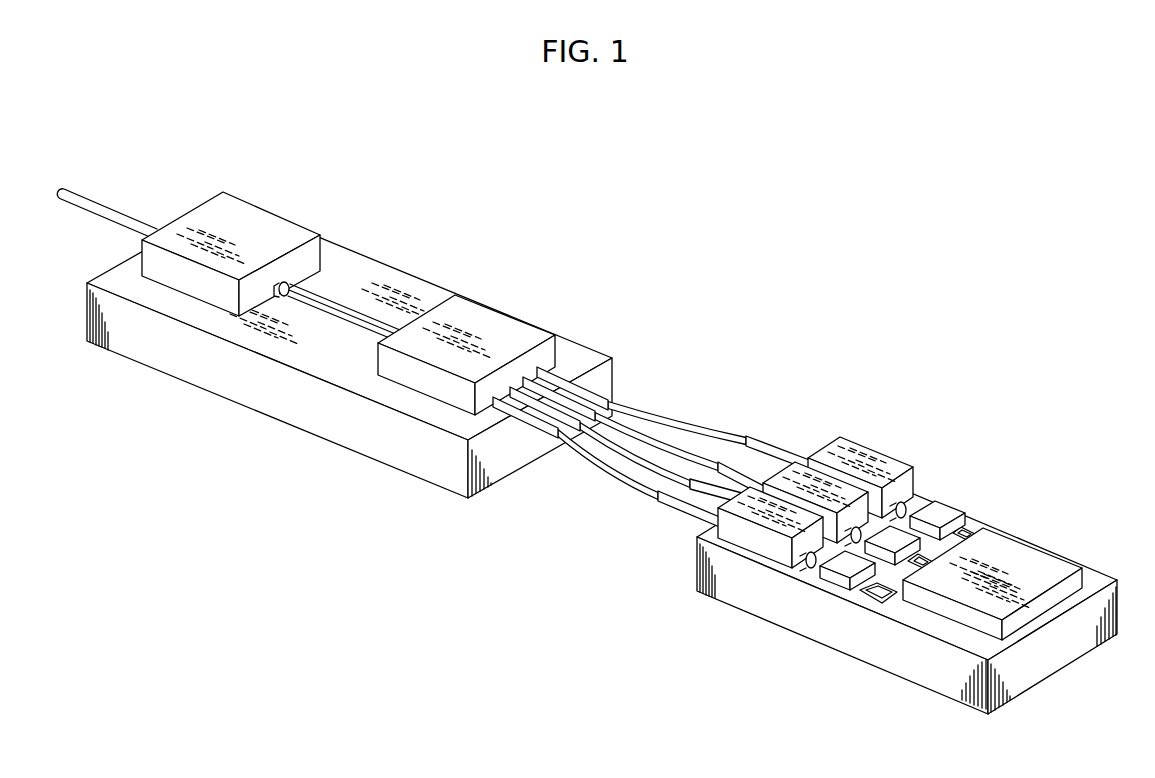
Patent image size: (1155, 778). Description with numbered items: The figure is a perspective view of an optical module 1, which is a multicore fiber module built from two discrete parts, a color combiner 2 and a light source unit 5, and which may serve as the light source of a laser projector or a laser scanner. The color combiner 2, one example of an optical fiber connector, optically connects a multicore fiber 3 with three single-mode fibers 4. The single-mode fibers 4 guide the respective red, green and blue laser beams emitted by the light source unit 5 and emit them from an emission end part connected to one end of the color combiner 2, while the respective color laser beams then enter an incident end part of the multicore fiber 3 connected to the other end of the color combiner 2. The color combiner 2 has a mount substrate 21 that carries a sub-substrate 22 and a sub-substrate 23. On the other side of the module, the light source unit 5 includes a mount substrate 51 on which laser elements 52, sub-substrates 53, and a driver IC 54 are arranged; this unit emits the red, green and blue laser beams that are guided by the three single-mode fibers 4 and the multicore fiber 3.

The optical module 1 is at (768, 277).
The color combiner 2 is at (216, 482).
The multicore fiber 3 is at (103, 210).
The single-mode fibers 4 is at (671, 418).
The light source unit 5 is at (787, 680).
The mount substrate 21 is at (377, 272).
The sub-substrate 22 is at (246, 228).
The sub-substrate 23 is at (495, 322).
The mount substrate 51 is at (1093, 582).
The laser elements 52 is at (935, 510).
The sub-substrates 53 is at (870, 462).
The driver IC 54 is at (1020, 560).